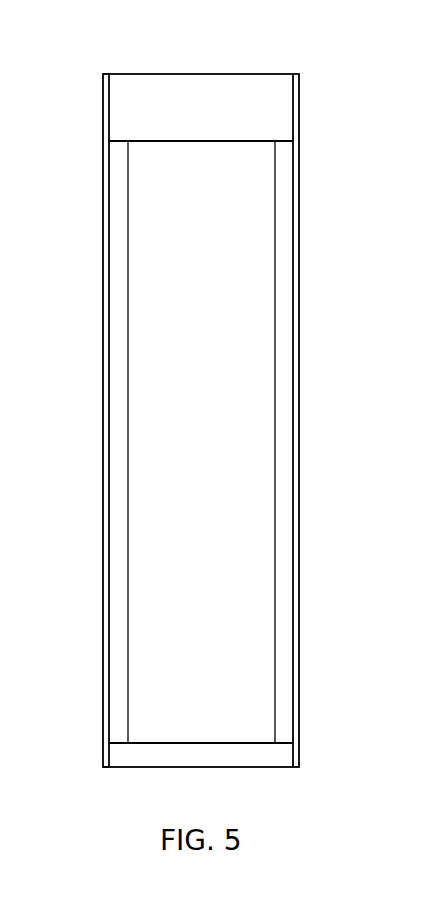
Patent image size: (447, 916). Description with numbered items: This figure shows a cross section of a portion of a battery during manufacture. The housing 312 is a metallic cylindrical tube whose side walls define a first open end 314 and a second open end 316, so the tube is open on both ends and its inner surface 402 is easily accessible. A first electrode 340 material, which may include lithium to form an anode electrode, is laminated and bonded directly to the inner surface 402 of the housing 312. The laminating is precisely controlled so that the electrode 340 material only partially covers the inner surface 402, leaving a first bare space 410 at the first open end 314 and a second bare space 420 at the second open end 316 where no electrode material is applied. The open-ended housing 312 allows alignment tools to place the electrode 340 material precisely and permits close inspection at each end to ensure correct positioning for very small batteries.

The first open end 314 is at (234, 61).
The housing 312 is at (300, 418).
The inner surface 402 is at (275, 115).
The second bare space 420 is at (253, 752).
The first electrode 340 is at (128, 442).
The first bare space 410 is at (109, 101).
The second open end 316 is at (170, 772).